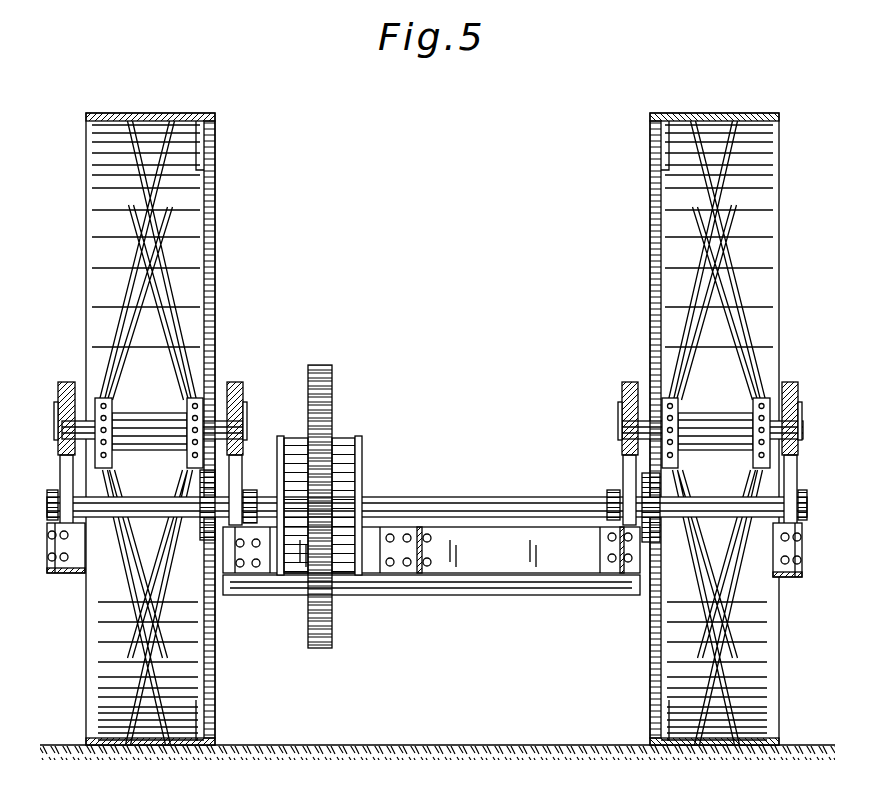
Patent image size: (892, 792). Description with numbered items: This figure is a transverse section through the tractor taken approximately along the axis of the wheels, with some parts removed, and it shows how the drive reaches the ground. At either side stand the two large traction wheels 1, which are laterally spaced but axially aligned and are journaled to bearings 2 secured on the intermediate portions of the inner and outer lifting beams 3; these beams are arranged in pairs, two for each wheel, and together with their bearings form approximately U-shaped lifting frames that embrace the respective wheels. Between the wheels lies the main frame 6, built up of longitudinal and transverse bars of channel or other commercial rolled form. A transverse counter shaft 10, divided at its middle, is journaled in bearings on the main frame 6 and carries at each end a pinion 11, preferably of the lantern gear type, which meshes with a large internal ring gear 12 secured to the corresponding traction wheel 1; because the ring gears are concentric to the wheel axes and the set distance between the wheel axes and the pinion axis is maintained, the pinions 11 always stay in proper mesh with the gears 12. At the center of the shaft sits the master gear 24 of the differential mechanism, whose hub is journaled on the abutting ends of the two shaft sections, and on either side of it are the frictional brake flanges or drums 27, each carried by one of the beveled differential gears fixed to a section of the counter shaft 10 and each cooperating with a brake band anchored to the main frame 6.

The traction wheel 1 is at (118, 192).
The bearing 2 is at (58, 383).
The lifting beam 3 is at (233, 383).
The main frame 6 is at (556, 556).
The counter shaft 10 is at (262, 498).
The pinion 11 is at (203, 526).
The internal ring gear 12 is at (215, 208).
The master gear 24 is at (323, 367).
The brake drum 27 is at (340, 437).